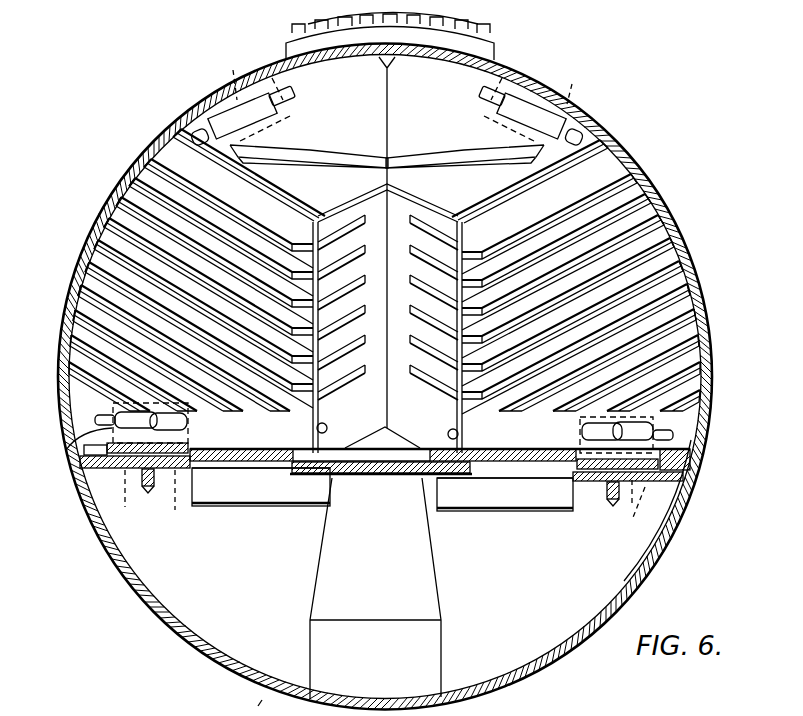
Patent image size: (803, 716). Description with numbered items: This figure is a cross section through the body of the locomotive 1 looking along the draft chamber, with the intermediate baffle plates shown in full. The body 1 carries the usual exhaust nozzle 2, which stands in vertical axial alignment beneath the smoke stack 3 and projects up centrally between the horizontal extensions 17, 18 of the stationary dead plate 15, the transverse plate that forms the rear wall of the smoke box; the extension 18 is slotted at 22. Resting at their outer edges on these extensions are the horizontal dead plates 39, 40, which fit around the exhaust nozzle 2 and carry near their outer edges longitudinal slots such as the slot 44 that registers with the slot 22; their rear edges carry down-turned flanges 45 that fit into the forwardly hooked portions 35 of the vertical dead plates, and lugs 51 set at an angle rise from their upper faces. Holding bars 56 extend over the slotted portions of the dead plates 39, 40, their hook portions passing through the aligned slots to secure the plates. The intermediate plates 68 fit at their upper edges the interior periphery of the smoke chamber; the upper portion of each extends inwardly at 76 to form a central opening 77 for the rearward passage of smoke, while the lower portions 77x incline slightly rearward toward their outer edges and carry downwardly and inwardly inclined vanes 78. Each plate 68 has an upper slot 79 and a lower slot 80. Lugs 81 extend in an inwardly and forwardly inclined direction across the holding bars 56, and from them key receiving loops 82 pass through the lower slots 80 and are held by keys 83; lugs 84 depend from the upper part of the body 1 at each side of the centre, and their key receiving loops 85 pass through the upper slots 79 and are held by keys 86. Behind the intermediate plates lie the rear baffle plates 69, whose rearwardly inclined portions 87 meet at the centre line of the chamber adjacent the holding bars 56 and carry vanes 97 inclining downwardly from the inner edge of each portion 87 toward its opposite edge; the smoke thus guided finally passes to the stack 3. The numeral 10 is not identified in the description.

The body of the locomotive 1 is at (93, 528).
The exhaust nozzle 2 is at (431, 583).
The smoke stack 3 is at (456, 19).
The bottom portion 10 is at (242, 708).
The stationary dead plate 15 is at (100, 450).
The horizontal extension 17 is at (657, 482).
The horizontal extension 18 is at (86, 475).
The slot 22 is at (375, 512).
The forwardly hooked portion 35 is at (538, 497).
The horizontal dead plate 39 is at (514, 465).
The horizontal dead plate 40 is at (272, 476).
The longitudinal slot 44 is at (211, 486).
The down-turned flange 45 is at (231, 474).
The lug 51 is at (272, 452).
The holding bar 56 is at (75, 426).
The intermediate plate 68 is at (80, 369).
The rear baffle plate 69 is at (409, 428).
The inwardly extending upper portion 76 is at (414, 115).
The central opening 77 is at (404, 206).
The lower portion 77x is at (695, 240).
The vane 78 is at (72, 304).
The upper slot 79 is at (265, 117).
The lower slot 80 is at (186, 429).
The lug 81 is at (122, 402).
The key receiving loop 82 is at (110, 442).
The key 83 is at (717, 440).
The lug 84 is at (402, 72).
The key receiving loop 85 is at (227, 119).
The key 86 is at (287, 92).
The rearwardly inclined portion 87 is at (374, 256).
The vane 97 is at (351, 391).